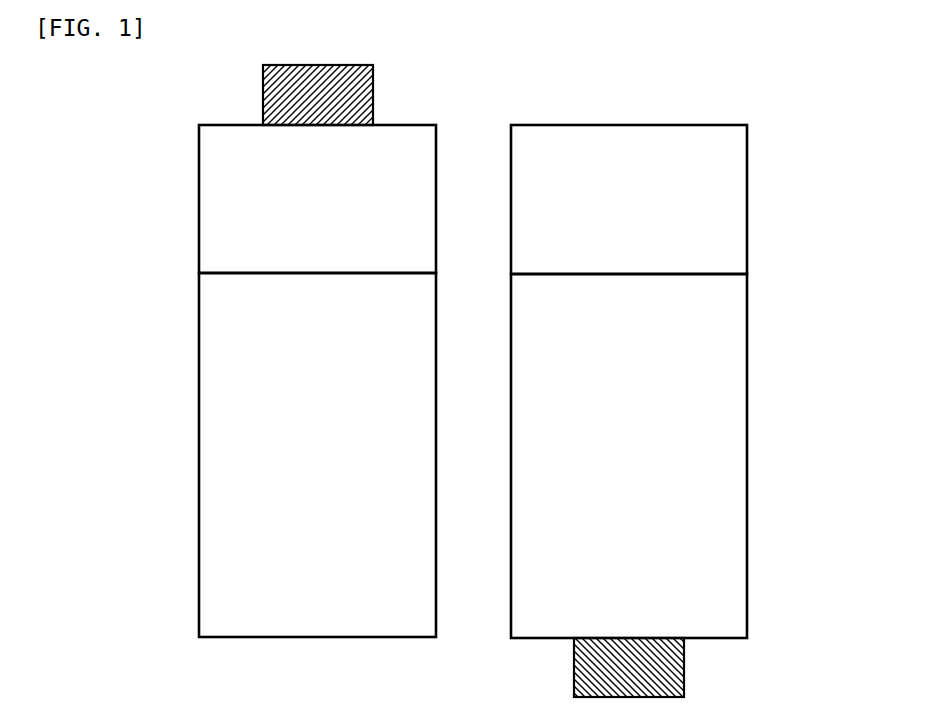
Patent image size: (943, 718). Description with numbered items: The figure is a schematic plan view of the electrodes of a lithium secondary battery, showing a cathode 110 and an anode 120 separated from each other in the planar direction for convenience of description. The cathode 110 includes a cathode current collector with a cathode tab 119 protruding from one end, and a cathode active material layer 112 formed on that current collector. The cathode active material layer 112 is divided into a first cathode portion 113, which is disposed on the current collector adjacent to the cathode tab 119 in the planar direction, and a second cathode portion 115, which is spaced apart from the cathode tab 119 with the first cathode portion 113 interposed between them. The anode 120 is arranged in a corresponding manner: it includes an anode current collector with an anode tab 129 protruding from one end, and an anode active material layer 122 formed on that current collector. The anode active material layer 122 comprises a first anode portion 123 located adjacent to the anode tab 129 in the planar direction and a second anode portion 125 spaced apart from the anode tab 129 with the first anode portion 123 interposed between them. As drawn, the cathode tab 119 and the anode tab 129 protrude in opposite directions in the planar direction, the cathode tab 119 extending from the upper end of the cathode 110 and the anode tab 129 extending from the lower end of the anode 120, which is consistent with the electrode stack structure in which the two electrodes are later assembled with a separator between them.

The cathode 110 is at (240, 351).
The cathode active material layer 112 is at (240, 381).
The first cathode portion 113 is at (217, 236).
The second cathode portion 115 is at (217, 544).
The cathode tab 119 is at (273, 89).
The anode 120 is at (705, 411).
The anode active material layer 122 is at (705, 381).
The first anode portion 123 is at (722, 535).
The second anode portion 125 is at (720, 225).
The anode tab 129 is at (673, 673).